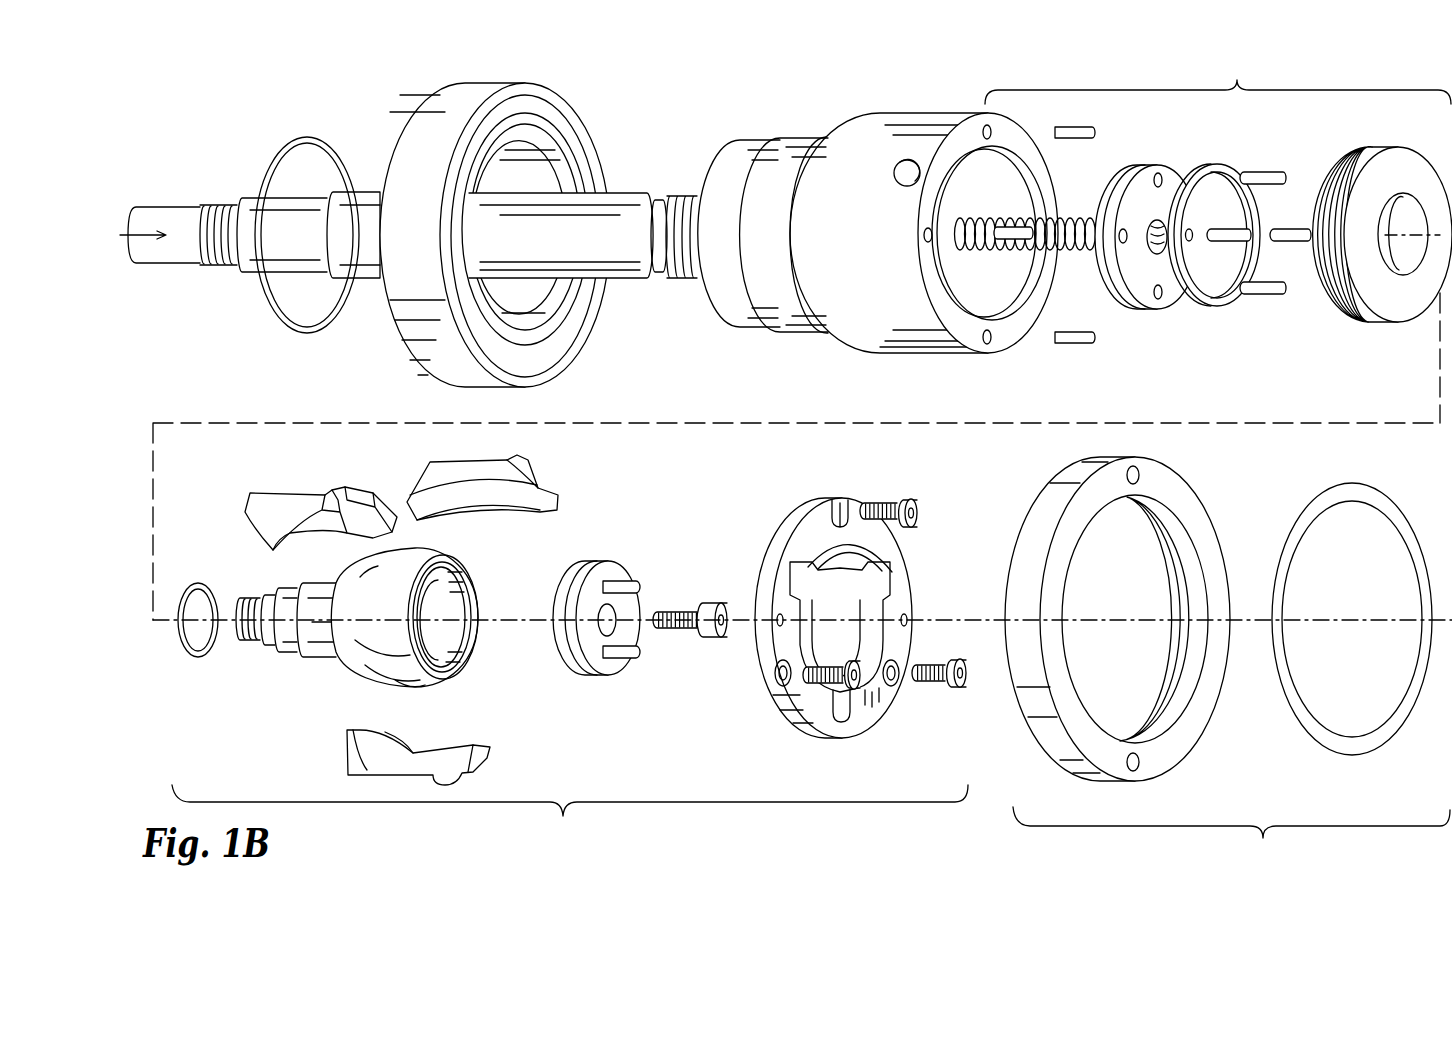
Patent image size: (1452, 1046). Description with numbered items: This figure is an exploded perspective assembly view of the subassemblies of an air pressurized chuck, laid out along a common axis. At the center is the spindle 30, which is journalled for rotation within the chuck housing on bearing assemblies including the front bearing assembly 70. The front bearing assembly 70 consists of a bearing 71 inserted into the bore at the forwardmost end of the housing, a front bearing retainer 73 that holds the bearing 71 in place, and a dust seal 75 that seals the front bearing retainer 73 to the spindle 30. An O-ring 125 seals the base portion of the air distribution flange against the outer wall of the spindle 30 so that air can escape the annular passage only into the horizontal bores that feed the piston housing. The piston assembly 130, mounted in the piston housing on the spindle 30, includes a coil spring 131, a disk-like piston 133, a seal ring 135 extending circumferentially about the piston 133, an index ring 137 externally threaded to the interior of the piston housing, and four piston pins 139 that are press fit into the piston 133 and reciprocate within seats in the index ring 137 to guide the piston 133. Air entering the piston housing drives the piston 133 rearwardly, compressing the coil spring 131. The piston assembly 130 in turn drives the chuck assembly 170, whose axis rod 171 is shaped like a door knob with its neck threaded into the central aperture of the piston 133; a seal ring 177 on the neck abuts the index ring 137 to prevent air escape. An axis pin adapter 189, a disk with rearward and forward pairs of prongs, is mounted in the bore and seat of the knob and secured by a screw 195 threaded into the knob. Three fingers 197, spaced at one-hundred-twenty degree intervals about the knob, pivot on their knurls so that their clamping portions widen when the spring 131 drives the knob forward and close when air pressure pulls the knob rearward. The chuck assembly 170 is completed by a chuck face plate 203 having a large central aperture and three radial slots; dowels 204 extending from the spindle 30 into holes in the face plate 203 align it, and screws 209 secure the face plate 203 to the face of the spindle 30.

The spindle 30 is at (756, 132).
The front bearing assembly 70 is at (1231, 839).
The bearing 71 is at (437, 113).
The front bearing retainer 73 is at (1152, 766).
The dust seal 75 is at (1339, 748).
The O-ring 125 is at (306, 138).
The piston assembly 130 is at (1218, 76).
The coil spring 131 is at (1062, 220).
The piston 133 is at (1140, 302).
The seal ring 135 is at (1208, 166).
The index ring 137 is at (1397, 305).
The piston pins 139 is at (1293, 229).
The chuck assembly 170 is at (570, 816).
The axis rod 171 is at (362, 647).
The seal ring 177 is at (187, 655).
The axis pin adapter 189 is at (602, 669).
The screw 195 is at (716, 603).
The fingers 197 is at (285, 500).
The chuck face plate 203 is at (803, 537).
The dowels 204 is at (1075, 128).
The screws 209 is at (903, 498).